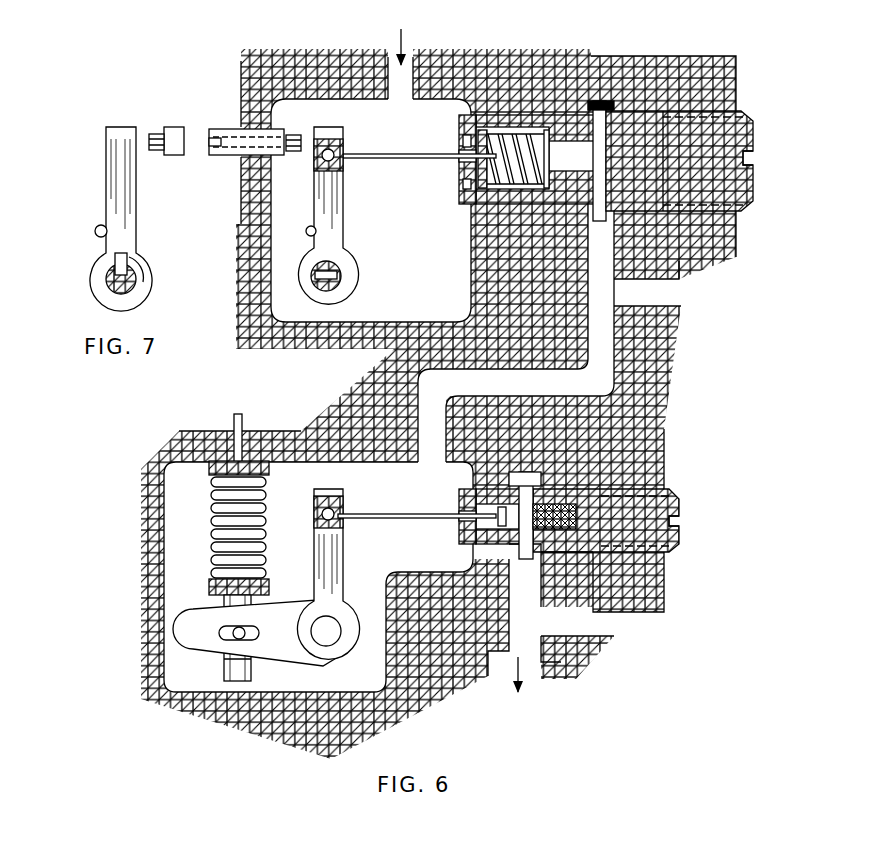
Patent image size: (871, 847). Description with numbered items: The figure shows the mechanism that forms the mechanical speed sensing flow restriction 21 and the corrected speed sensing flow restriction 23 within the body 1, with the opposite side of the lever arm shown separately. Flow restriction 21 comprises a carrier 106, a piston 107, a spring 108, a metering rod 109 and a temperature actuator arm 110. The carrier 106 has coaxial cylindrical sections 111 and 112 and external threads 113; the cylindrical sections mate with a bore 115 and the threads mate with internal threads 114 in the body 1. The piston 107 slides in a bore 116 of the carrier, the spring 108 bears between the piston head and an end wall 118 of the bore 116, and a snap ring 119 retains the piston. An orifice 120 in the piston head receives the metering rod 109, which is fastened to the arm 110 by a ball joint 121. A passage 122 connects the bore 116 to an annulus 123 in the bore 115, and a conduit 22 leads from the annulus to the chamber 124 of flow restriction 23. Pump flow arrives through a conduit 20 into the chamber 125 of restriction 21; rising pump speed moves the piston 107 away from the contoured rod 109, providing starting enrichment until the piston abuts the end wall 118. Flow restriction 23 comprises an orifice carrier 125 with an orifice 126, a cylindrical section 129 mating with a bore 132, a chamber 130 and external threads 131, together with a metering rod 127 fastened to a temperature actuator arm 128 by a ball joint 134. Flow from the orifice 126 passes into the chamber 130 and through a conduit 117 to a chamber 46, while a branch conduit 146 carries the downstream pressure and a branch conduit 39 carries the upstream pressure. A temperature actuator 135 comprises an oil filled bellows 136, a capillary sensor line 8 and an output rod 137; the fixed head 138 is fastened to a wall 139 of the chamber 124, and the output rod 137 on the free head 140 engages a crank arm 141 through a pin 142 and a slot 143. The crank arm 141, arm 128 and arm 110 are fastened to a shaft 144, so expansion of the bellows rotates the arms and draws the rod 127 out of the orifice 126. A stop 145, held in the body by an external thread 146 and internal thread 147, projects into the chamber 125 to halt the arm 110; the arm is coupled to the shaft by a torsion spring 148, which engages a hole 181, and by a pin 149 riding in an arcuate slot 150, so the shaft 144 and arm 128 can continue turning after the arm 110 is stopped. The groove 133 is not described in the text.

In FIG. 6, the body 1 is at (738, 248).
In FIG. 6, the capillary sensor line 8 is at (241, 428).
In FIG. 6, the conduit 20 is at (390, 82).
In FIG. 6, the mechanical speed sensing flow restriction 21 is at (469, 163).
In FIG. 6, the conduit 22 is at (605, 270).
In FIG. 6, the corrected speed sensing flow restriction 23 is at (534, 516).
In FIG. 6, the branch conduit 39 is at (672, 297).
In FIG. 6, the chamber 46 is at (555, 681).
In FIG. 6, the carrier 106 is at (706, 130).
In FIG. 6, the piston 107 is at (505, 116).
In FIG. 6, the spring 108 is at (553, 116).
In FIG. 6, the metering rod 109 is at (408, 160).
In FIG. 6, the temperature actuator arm 110 is at (297, 426).
In FIG. 7, the temperature actuator arm 110 is at (113, 219).
In FIG. 6, the cylindrical section 111 is at (475, 108).
In FIG. 6, the cylindrical section 112 is at (605, 104).
In FIG. 6, the external threads 113 is at (700, 112).
In FIG. 6, the internal threads 114 is at (750, 210).
In FIG. 6, the bore 115 is at (486, 192).
In FIG. 6, the bore 116 is at (498, 172).
In FIG. 6, the conduit 117 is at (530, 600).
In FIG. 6, the end wall 118 is at (552, 172).
In FIG. 6, the snap ring 119 is at (462, 188).
In FIG. 6, the orifice 120 is at (462, 144).
In FIG. 6, the ball joint 121 is at (352, 144).
In FIG. 6, the passage 122 is at (596, 168).
In FIG. 6, the annulus 123 is at (605, 228).
In FIG. 6, the chamber 124 is at (438, 556).
In FIG. 6, the chamber / orifice carrier 125 is at (436, 308).
In FIG. 6, the orifice 126 is at (480, 492).
In FIG. 6, the metering rod 127 is at (412, 487).
In FIG. 6, the temperature actuator arm 128 is at (349, 567).
In FIG. 6, the cylindrical section 129 is at (448, 575).
In FIG. 6, the chamber 130 is at (510, 528).
In FIG. 6, the external threads 131 is at (591, 515).
In FIG. 6, the bore 132 is at (580, 555).
In FIG. 6, the groove 133 is at (676, 522).
In FIG. 6, the ball joint 134 is at (348, 510).
In FIG. 6, the temperature actuator 135 is at (180, 510).
In FIG. 6, the oil filled bellows 136 is at (212, 486).
In FIG. 6, the output rod 137 is at (190, 710).
In FIG. 6, the fixed head 138 is at (208, 465).
In FIG. 6, the wall 139 is at (303, 466).
In FIG. 6, the free head 140 is at (212, 587).
In FIG. 6, the crank arm 141 is at (183, 667).
In FIG. 6, the pin 142 is at (230, 658).
In FIG. 6, the slot 143 is at (190, 616).
In FIG. 6, the shaft 144 is at (320, 275).
In FIG. 7, the shaft 144 is at (108, 282).
In FIG. 6, the stop 145 is at (192, 126).
In FIG. 6, the external thread / branch conduit 146 is at (580, 632).
In FIG. 6, the internal thread 147 is at (240, 152).
In FIG. 6, the torsion spring 148 is at (332, 250).
In FIG. 7, the torsion spring 148 is at (96, 228).
In FIG. 7, the pin 149 is at (113, 263).
In FIG. 7, the arcuate slot 150 is at (140, 264).
In FIG. 6, the hole 181 is at (316, 278).